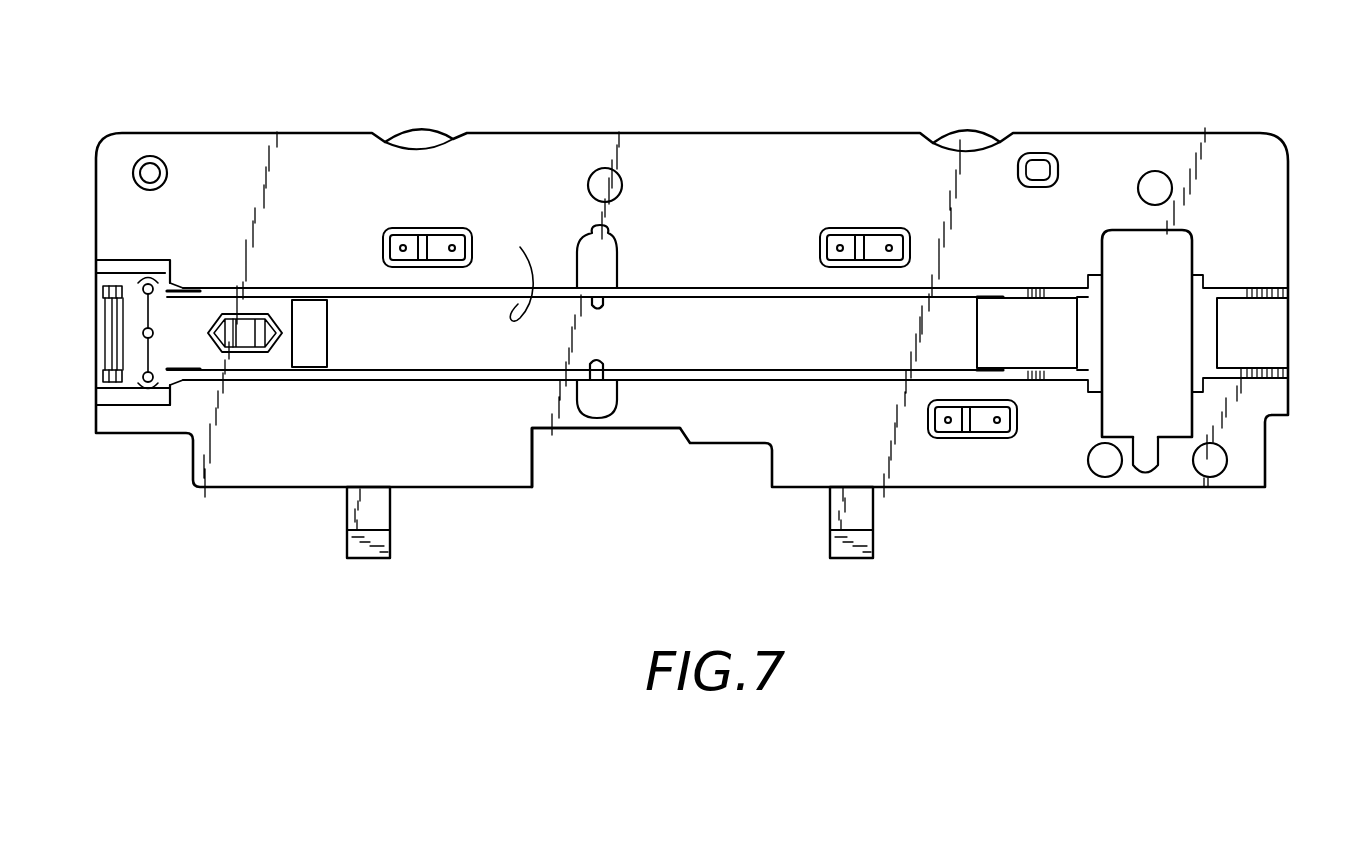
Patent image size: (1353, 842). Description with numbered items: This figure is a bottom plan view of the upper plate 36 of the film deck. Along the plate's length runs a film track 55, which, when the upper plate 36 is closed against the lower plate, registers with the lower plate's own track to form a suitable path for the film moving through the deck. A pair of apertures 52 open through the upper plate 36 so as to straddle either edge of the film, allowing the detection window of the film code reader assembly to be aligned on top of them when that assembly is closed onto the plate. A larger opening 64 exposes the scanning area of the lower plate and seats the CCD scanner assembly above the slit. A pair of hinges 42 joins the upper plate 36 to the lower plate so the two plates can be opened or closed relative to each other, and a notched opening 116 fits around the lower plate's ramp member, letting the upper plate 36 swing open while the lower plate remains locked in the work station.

The upper plate 36 is at (715, 108).
The hinges 42 is at (390, 537).
The apertures 52 is at (617, 257).
The film track 55 is at (508, 278).
The opening 64 is at (1192, 265).
The notched opening 116 is at (532, 468).